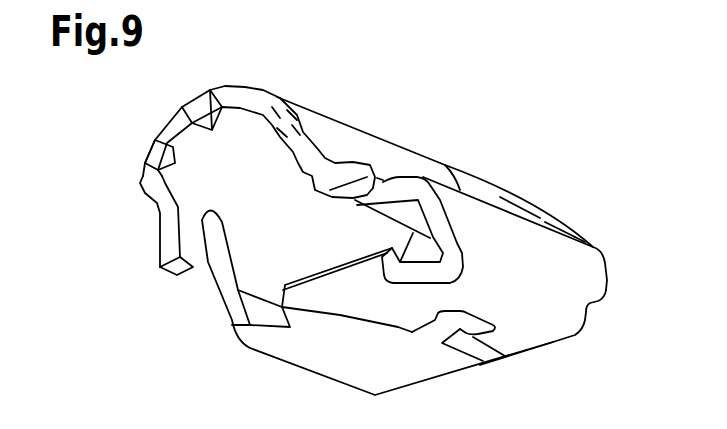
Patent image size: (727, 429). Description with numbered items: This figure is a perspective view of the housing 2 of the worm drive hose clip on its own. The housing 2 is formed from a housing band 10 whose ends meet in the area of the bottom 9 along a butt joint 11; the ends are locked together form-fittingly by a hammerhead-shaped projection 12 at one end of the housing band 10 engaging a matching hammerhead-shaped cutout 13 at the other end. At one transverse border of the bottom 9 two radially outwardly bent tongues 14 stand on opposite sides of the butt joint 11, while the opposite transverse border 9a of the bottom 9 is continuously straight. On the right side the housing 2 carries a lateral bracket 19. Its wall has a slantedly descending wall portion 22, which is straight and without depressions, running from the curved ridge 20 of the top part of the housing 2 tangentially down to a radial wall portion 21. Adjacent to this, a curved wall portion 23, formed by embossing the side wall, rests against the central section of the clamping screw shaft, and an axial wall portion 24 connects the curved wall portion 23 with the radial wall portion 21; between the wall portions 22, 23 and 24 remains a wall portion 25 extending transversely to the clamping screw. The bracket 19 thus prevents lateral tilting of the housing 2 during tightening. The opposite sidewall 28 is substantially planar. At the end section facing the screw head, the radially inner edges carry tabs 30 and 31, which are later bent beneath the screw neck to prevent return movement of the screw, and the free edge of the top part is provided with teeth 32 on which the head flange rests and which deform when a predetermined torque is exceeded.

The housing 2 is at (557, 187).
The bottom 9 is at (367, 345).
The transverse border 9a is at (542, 345).
The housing band 10 is at (240, 182).
The butt joint 11 is at (397, 330).
The hammerhead-shaped projection 12 is at (457, 322).
The hammerhead-shaped cutout 13 is at (470, 322).
The tongues 14 is at (360, 280).
The lateral bracket 19 is at (583, 270).
The curved ridge 20 is at (427, 153).
The radial wall portion 21 is at (510, 228).
The slantedly descending wall portion 22 is at (540, 215).
The curved wall portion 23 is at (393, 153).
The axial wall portion 24 is at (385, 181).
The transversely extending wall portion 25 is at (467, 193).
The sidewall 28 is at (272, 242).
The tab 30 is at (160, 247).
The tab 31 is at (352, 192).
The teeth 32 is at (173, 127).